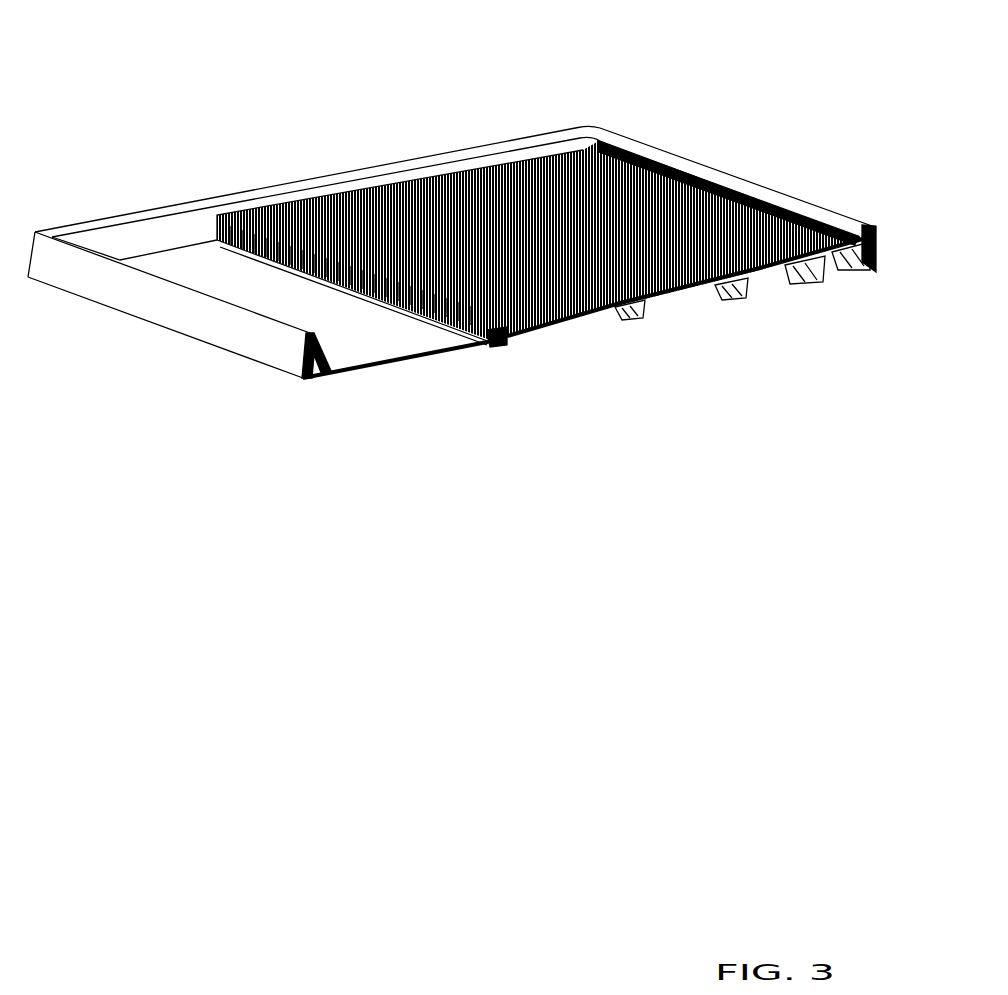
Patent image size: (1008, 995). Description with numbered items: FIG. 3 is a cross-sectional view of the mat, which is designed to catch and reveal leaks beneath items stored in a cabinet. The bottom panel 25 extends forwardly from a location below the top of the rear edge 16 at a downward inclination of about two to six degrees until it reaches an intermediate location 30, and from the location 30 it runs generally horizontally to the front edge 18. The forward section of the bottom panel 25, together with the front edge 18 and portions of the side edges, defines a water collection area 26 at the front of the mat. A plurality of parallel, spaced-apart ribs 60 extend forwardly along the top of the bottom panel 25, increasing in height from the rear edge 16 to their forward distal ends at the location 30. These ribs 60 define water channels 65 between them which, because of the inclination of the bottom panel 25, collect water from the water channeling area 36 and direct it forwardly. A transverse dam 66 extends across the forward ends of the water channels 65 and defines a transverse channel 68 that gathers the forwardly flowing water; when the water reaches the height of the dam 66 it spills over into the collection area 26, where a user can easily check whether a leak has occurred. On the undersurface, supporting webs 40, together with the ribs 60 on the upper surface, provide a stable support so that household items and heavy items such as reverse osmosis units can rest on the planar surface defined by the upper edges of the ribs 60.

The rear edge 16 is at (750, 190).
The front edge 18 is at (193, 335).
The bottom panel 25 is at (585, 337).
The water collection area 26 is at (205, 262).
The intermediate location 30 is at (490, 345).
The water channeling area 36 is at (590, 108).
The webs 40 is at (740, 297).
The ribs 60 is at (523, 337).
The water channels 65 is at (219, 228).
The transverse dam 66 is at (378, 308).
The transverse channel 68 is at (372, 298).